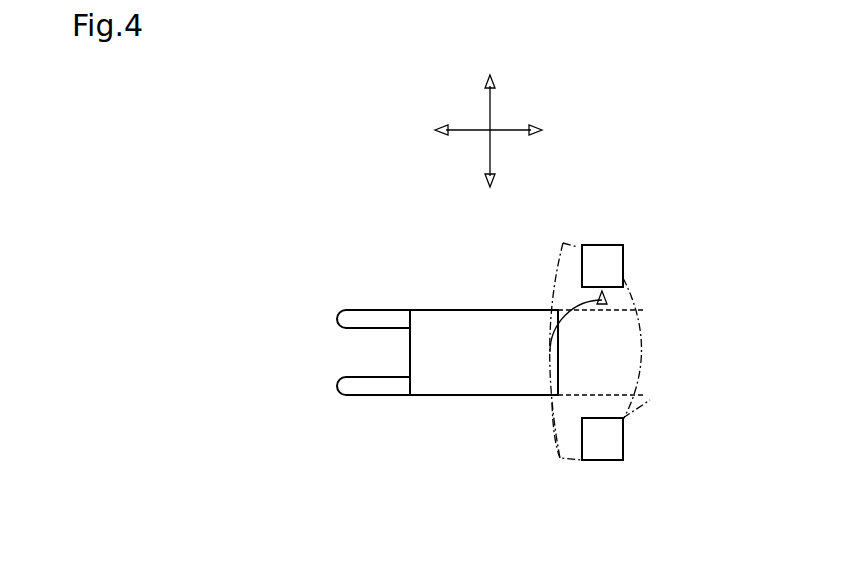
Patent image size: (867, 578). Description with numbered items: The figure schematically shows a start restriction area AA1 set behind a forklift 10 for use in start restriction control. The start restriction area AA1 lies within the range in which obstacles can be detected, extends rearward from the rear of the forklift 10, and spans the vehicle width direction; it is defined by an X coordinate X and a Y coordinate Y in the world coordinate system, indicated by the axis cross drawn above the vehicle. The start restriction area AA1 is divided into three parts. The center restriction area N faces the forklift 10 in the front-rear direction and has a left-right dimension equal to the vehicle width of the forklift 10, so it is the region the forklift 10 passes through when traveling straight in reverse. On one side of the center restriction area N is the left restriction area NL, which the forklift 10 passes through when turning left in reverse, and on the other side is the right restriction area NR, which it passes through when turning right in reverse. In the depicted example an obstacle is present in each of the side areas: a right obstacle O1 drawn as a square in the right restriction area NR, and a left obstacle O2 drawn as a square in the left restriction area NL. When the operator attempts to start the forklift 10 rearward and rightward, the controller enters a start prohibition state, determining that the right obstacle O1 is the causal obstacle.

The forklift 10 is at (453, 309).
The right obstacle O1 is at (602, 244).
The left obstacle O2 is at (605, 461).
The center restriction area N is at (637, 352).
The right restriction area NR is at (628, 290).
The left restriction area NL is at (577, 440).
The start restriction area AA1 is at (625, 420).
The X coordinate X is at (492, 147).
The Y coordinate Y is at (508, 129).